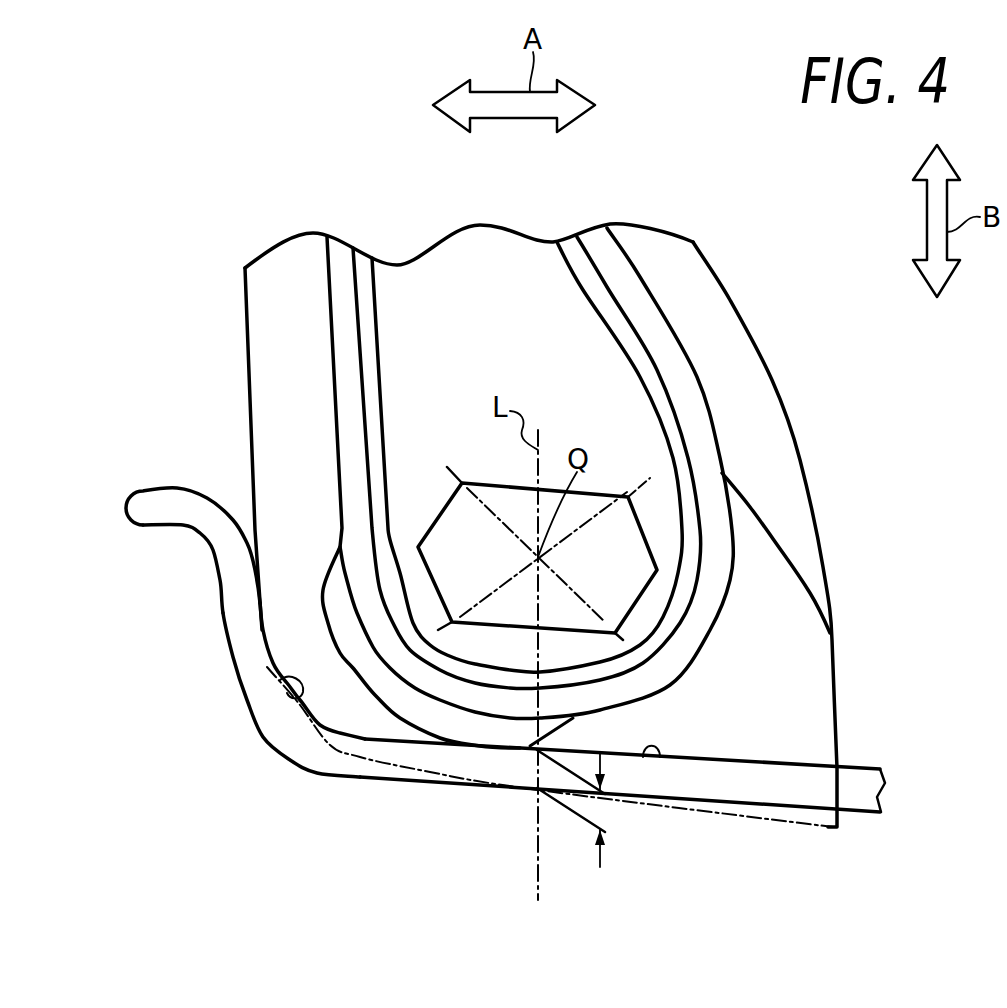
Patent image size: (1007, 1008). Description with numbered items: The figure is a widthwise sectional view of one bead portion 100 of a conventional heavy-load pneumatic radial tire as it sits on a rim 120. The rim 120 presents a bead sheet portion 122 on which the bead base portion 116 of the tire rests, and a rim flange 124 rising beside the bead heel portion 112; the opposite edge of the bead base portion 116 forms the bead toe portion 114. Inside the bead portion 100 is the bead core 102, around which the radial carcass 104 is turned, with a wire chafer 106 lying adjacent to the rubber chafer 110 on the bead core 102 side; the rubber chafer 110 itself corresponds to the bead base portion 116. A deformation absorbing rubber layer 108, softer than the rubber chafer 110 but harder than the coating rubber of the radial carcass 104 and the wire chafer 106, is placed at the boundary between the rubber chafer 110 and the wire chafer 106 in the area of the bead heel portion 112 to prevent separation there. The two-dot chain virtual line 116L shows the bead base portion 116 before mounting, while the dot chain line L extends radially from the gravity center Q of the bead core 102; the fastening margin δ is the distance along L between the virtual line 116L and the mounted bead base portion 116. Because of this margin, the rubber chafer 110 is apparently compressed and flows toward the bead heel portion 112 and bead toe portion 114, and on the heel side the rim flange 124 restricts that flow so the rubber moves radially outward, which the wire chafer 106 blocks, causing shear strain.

The bead portion 100 is at (757, 314).
The bead core 102 is at (627, 522).
The radial carcass 104 is at (593, 270).
The wire chafer 106 is at (690, 403).
The deformation absorbing rubber layer 108 is at (357, 660).
The rubber chafer 110 is at (297, 503).
The bead heel portion 112 is at (322, 725).
The bead toe portion 114 is at (840, 764).
The bead base portion 116 is at (705, 760).
The virtual line 116L is at (743, 820).
The rim 120 is at (131, 512).
The bead sheet portion 122 is at (648, 757).
The rim flange 124 is at (280, 680).